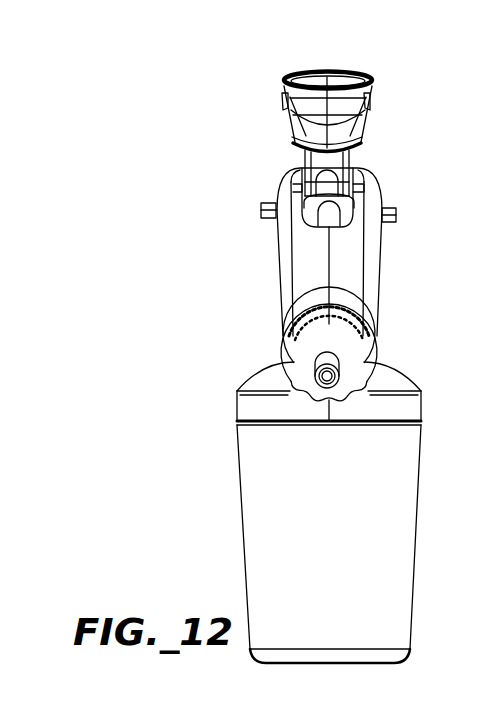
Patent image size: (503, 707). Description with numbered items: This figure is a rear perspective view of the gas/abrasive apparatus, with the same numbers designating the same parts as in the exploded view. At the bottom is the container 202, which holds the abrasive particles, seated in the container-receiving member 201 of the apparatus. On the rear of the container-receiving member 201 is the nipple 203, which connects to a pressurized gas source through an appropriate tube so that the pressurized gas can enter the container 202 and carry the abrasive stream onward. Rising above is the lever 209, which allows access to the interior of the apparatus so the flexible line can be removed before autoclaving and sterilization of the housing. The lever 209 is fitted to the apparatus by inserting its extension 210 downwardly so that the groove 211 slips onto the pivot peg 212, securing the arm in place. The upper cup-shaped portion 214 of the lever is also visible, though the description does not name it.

The mouthpiece rim 214 is at (351, 70).
The lever 209 is at (369, 113).
The extension 210 is at (346, 158).
The groove 211 is at (348, 175).
The pivot peg 212 is at (350, 211).
The nipple 203 is at (339, 370).
The container-receiving member 201 is at (422, 406).
The container 202 is at (419, 532).